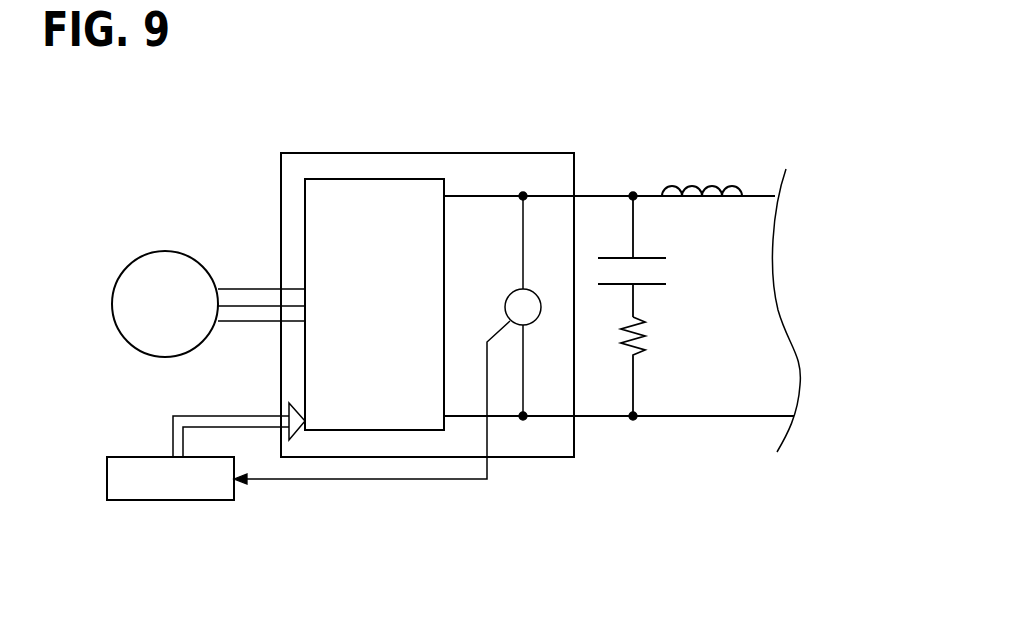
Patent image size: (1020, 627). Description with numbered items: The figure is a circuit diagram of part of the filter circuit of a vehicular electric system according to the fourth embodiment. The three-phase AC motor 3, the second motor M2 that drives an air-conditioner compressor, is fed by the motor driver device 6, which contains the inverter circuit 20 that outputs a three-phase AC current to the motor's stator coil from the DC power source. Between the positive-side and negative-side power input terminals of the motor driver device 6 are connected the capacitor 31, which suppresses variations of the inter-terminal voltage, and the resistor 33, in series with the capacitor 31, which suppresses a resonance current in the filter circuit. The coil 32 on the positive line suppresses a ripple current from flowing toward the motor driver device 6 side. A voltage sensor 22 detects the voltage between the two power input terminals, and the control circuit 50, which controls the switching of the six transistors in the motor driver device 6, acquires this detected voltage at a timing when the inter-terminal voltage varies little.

The three-phase AC motor 3 is at (128, 263).
The motor driver device 6 is at (311, 153).
The inverter circuit 20 is at (394, 179).
The voltage sensor 22 is at (509, 292).
The capacitor 31 is at (647, 285).
The coil 32 is at (695, 186).
The resistor 33 is at (636, 353).
The control circuit 50 is at (117, 457).